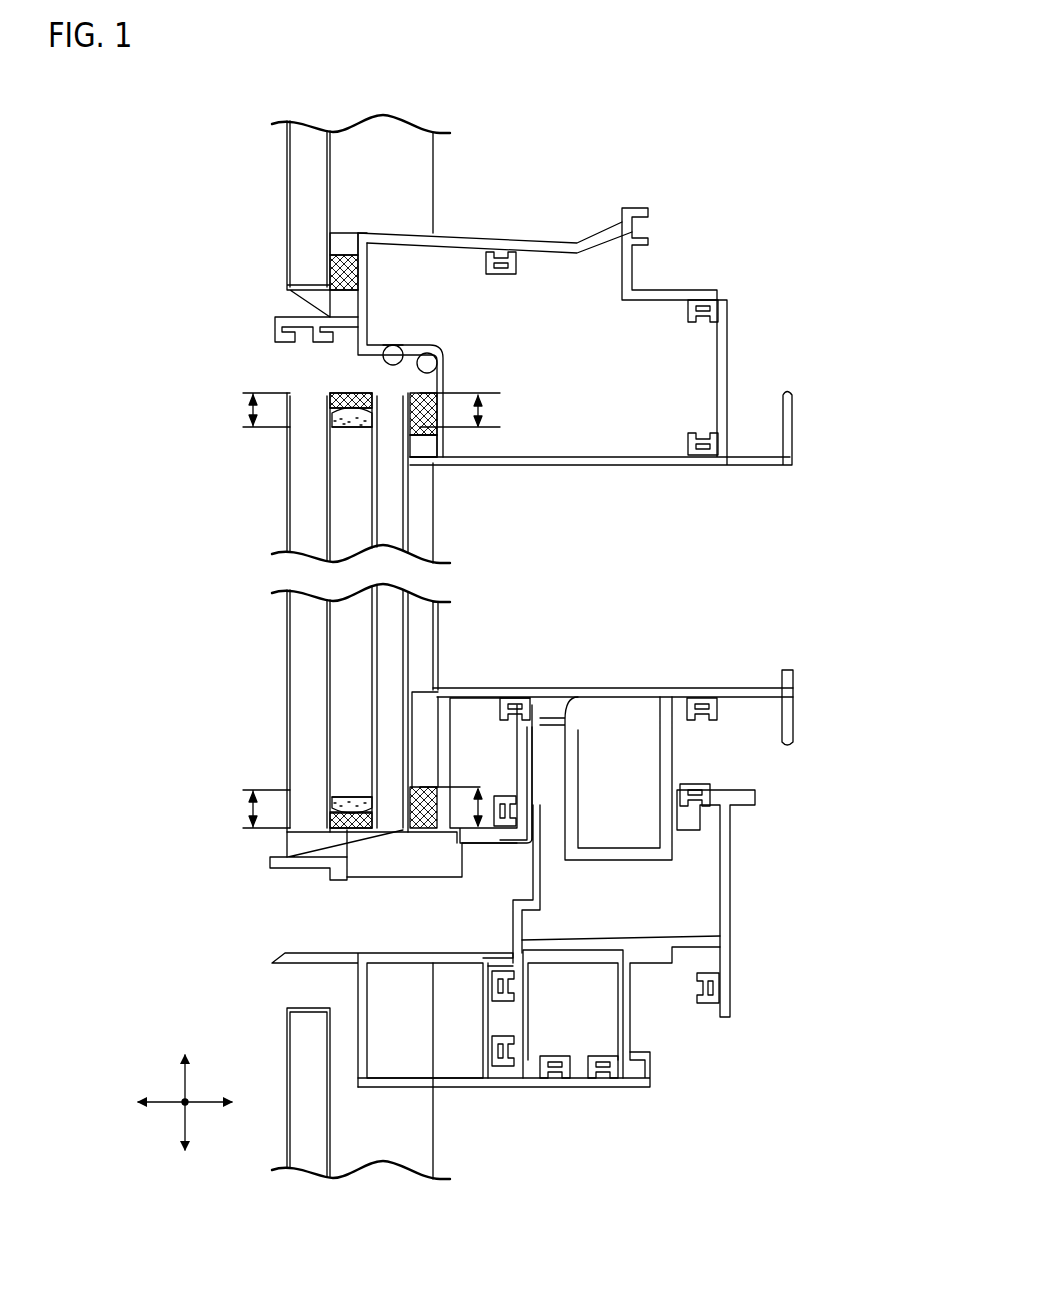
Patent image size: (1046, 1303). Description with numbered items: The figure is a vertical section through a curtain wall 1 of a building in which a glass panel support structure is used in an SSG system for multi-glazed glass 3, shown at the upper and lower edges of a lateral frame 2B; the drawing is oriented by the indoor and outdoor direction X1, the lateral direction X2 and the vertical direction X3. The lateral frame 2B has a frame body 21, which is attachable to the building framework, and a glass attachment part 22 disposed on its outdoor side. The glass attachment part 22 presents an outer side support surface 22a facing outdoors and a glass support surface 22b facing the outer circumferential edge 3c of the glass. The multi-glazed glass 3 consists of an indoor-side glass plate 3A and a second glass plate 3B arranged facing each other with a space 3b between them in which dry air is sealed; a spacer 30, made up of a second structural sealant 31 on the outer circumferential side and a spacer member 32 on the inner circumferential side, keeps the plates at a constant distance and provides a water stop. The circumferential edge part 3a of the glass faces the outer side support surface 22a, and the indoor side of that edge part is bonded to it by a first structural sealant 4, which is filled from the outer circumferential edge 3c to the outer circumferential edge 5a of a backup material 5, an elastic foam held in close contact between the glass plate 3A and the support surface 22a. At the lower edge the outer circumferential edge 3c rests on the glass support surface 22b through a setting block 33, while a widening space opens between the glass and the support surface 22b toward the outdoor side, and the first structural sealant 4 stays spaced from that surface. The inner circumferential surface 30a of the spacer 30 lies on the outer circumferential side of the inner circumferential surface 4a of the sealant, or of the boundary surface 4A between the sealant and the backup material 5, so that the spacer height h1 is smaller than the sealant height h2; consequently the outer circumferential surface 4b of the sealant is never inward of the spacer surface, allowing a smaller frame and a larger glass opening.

The curtain wall 1 is at (215, 188).
The lateral frame 2B is at (735, 345).
The frame body 21 is at (597, 240).
The glass attachment part 22 is at (415, 345).
The outer side support surface 22a is at (405, 355).
The glass support surface 22b is at (400, 348).
The multi-glazed glass 3 is at (280, 467).
The indoor-side glass plate 3A is at (362, 633).
The glass plate 3B is at (287, 528).
The circumferential edge part 3a is at (430, 445).
The space 3b is at (352, 728).
The outer circumferential edge 3c is at (385, 393).
The first structural sealant 4 is at (445, 390).
The boundary surface 4A is at (437, 470).
The inner circumferential surface 4a is at (435, 445).
The outer circumferential surface 4b is at (440, 375).
The backup material 5 is at (365, 428).
The outer circumferential edge 5a is at (375, 395).
The spacer 30 is at (261, 569).
The inner circumferential surface 30a is at (352, 432).
The second structural sealant 31 is at (335, 410).
The spacer member 32 is at (333, 420).
The setting block 33 is at (300, 843).
The height dimension of the spacer h1 is at (251, 610).
The height dimension of the first structural sealant h2 is at (495, 790).
The indoor and outdoor direction X1 is at (200, 1107).
The lateral direction X2 is at (180, 1105).
The vertical direction X3 is at (180, 1082).